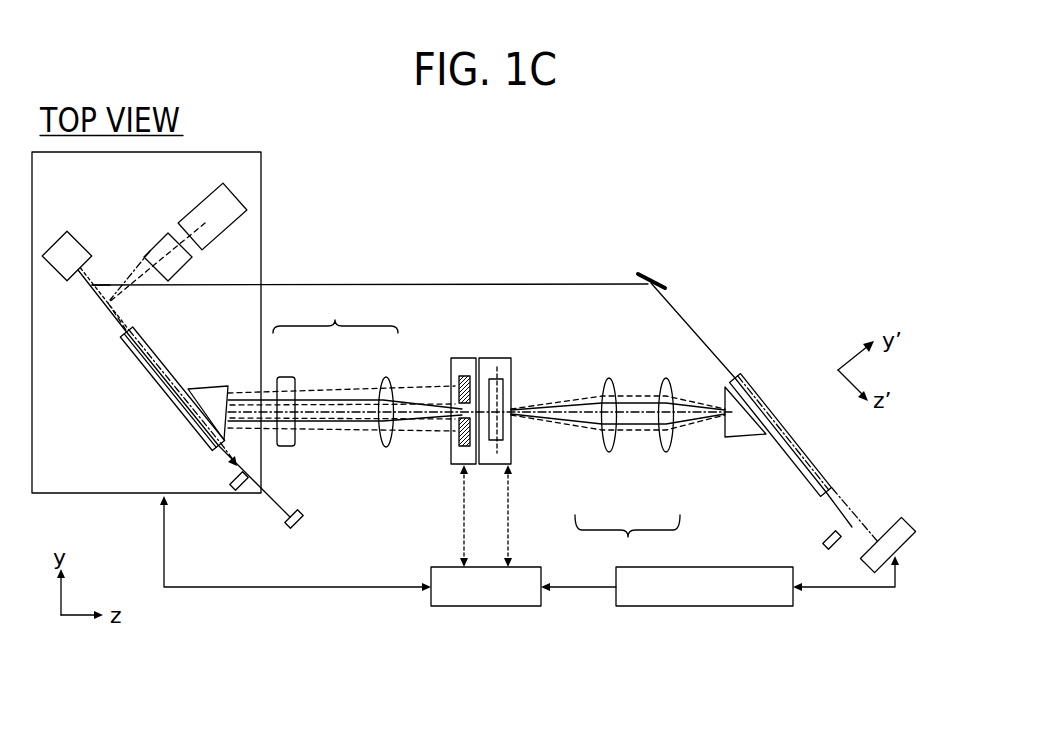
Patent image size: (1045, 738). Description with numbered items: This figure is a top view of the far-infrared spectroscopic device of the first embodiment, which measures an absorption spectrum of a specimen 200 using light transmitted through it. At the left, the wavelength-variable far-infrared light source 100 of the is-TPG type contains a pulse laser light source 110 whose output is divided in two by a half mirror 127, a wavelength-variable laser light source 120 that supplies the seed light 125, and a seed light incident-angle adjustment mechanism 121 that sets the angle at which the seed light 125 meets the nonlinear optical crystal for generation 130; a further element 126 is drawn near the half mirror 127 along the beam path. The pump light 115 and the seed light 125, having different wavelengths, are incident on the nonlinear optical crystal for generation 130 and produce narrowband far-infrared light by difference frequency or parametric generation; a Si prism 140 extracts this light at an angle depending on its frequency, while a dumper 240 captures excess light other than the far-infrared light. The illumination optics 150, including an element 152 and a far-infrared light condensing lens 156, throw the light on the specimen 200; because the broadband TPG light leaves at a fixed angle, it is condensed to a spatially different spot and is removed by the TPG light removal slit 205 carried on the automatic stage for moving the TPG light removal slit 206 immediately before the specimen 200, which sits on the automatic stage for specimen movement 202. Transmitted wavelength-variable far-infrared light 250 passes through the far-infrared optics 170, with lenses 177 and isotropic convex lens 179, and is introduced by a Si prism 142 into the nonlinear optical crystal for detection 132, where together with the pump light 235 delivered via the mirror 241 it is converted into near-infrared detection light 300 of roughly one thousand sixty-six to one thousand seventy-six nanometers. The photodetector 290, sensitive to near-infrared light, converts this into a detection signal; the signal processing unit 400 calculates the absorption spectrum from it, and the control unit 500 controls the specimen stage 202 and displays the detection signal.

The wavelength-variable far-infrared light source 100 is at (262, 193).
The pulse laser light source 110 is at (66, 231).
The pump light 115 is at (96, 295).
The wavelength-variable laser light source 120 is at (190, 213).
The seed light incident-angle adjustment mechanism 121 is at (161, 236).
The seed light 125 is at (128, 315).
The first light 126 is at (103, 285).
The half mirror 127 is at (80, 290).
The nonlinear optical crystal for generation 130 is at (185, 418).
The nonlinear optical crystal for detection 132 is at (752, 394).
The Si prism 140 is at (200, 387).
The Si prism 142 is at (752, 438).
The illumination optics 150 is at (335, 365).
The optical element 152 is at (286, 377).
The far-infrared light condensing lens 156 is at (384, 377).
The far-infrared optics 170 is at (626, 471).
The lens 177 is at (608, 452).
The isotropic convex lens 179 is at (665, 452).
The specimen 200 is at (481, 390).
The automatic stage for specimen movement 202 is at (497, 358).
The TPG light removal slit 205 is at (459, 440).
The automatic stage for moving the TPG light removal slit 206 is at (457, 358).
The pump light 235 is at (686, 322).
The dumper 240 is at (235, 489).
The mirror 241 is at (856, 513).
The wavelength-variable far-infrared light 250 is at (572, 405).
The photodetector 290 is at (905, 545).
The detection light 300 is at (838, 487).
The signal processing unit 400 is at (702, 567).
The control unit 500 is at (440, 567).